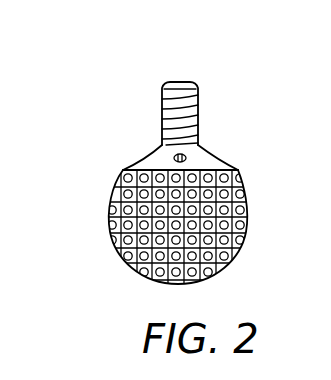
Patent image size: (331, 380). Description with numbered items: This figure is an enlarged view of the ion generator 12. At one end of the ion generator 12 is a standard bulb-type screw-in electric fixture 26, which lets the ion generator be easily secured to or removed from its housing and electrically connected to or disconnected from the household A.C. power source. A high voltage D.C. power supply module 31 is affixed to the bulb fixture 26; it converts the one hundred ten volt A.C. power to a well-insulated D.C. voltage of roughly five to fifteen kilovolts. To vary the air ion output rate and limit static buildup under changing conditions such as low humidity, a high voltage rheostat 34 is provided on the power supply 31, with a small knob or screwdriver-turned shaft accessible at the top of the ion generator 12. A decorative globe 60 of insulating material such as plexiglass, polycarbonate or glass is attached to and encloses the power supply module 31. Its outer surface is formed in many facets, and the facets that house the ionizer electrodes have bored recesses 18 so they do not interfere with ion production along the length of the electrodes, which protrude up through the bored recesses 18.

The ion generator 12 is at (135, 152).
The bored recesses 18 is at (238, 242).
The bulb-type screw-in electric fixture 26 is at (198, 90).
The high voltage D.C. power supply module 31 is at (218, 160).
The high voltage rheostat 34 is at (187, 155).
The decorative globe 60 is at (245, 190).